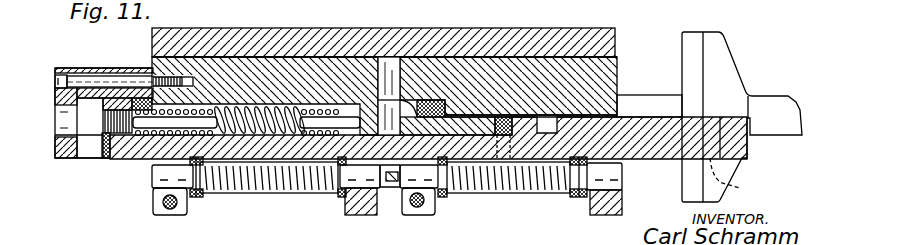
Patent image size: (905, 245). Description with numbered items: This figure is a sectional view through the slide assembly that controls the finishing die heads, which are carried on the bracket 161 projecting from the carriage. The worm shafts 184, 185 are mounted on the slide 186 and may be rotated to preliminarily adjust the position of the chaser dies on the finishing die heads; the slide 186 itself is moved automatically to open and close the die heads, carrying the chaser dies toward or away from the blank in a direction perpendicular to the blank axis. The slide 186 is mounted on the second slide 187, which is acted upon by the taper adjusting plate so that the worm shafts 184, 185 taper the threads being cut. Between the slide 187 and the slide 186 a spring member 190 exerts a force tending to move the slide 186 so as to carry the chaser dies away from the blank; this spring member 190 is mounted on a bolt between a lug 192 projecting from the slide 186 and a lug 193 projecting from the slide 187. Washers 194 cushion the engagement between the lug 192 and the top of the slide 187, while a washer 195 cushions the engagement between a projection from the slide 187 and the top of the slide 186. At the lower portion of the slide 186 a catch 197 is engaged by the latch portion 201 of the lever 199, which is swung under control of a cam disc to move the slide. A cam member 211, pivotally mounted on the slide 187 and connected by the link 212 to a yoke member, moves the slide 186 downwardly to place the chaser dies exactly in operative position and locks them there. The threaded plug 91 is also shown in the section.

The threaded adjusting plug 91 is at (105, 115).
The bracket 161 is at (613, 28).
The worm shaft 184 is at (288, 194).
The worm shaft 185 is at (495, 193).
The slide 186 is at (636, 152).
The second slide 187 is at (614, 78).
The spring member 190 is at (147, 133).
The lug 192 is at (115, 98).
The lug 193 is at (316, 104).
The washers 194 is at (133, 98).
The washer 195 is at (105, 160).
The catch 197 is at (744, 177).
The lever 199 is at (657, 100).
The latch portion 201 is at (682, 189).
The cam member 211 is at (405, 98).
The link 212 is at (446, 100).